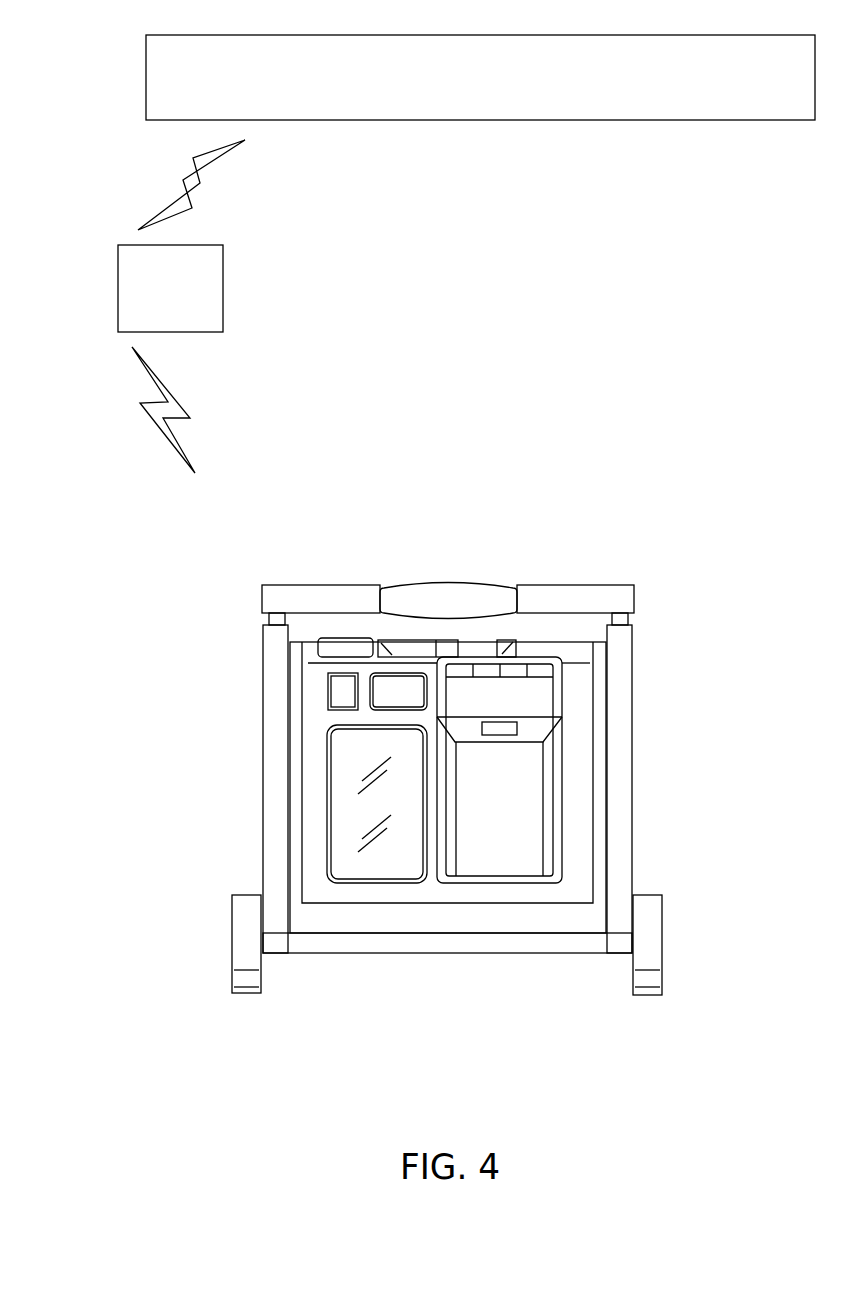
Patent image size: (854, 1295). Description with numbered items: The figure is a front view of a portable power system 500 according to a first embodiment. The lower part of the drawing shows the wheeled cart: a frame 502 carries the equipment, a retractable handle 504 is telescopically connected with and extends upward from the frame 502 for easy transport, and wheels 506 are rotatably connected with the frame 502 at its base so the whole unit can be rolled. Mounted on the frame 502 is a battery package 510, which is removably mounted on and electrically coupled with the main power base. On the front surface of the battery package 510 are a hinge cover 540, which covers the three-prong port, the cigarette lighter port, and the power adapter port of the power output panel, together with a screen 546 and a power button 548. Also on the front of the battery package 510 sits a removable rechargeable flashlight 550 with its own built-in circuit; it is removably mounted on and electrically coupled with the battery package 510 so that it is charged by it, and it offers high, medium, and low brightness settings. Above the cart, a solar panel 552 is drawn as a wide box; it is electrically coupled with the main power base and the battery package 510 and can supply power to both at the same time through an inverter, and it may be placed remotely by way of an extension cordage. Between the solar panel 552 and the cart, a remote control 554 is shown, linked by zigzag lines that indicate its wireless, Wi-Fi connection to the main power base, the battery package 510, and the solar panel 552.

The power system 500 is at (76, 33).
The frame 502 is at (625, 732).
The retractable handle 504 is at (582, 598).
The wheels 506 is at (243, 962).
The battery package 510 is at (580, 775).
The hinge cover 540 is at (355, 858).
The screen 546 is at (387, 693).
The power button 548 is at (343, 692).
The removable rechargeable flashlight 550 is at (520, 807).
The solar panel 552 is at (480, 77).
The remote control 554 is at (170, 288).